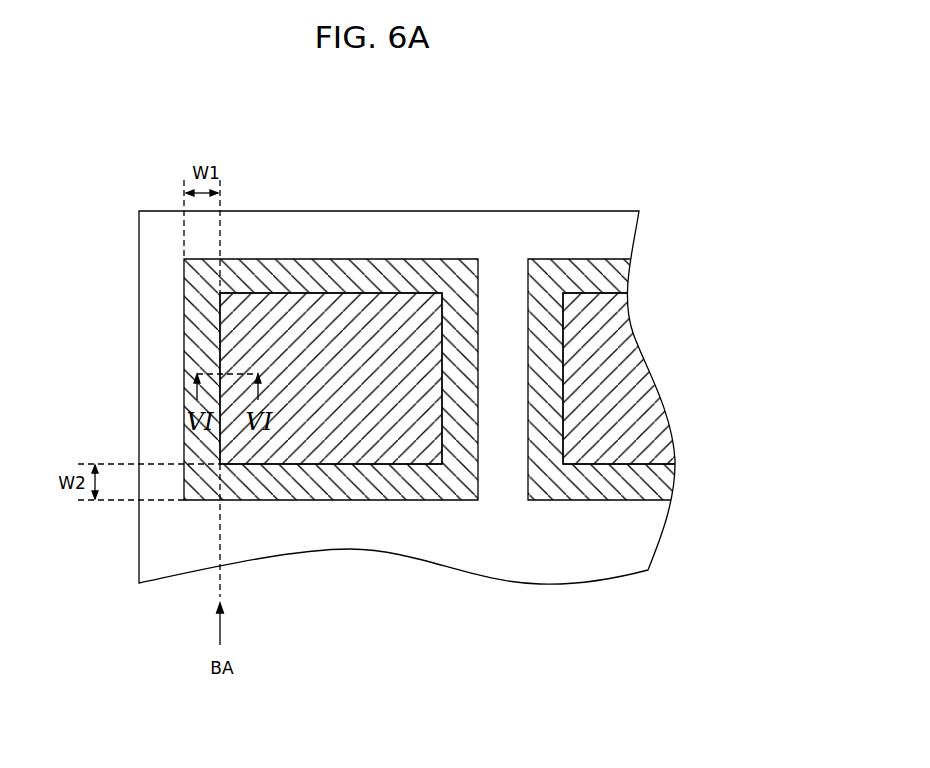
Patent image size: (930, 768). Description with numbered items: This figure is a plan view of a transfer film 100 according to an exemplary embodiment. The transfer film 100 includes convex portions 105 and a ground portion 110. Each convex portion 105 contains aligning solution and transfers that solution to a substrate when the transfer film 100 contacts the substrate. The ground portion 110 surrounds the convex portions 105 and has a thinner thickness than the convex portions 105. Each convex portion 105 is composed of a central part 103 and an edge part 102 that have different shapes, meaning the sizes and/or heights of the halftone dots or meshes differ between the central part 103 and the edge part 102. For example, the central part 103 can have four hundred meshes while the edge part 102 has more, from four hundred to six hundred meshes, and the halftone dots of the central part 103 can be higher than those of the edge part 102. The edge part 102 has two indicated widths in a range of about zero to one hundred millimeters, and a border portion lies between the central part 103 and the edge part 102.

The transfer film 100 is at (485, 204).
The edge part 102 is at (367, 267).
The central part 103 is at (423, 307).
The convex portion 105 is at (331, 322).
The ground portion 110 is at (548, 232).